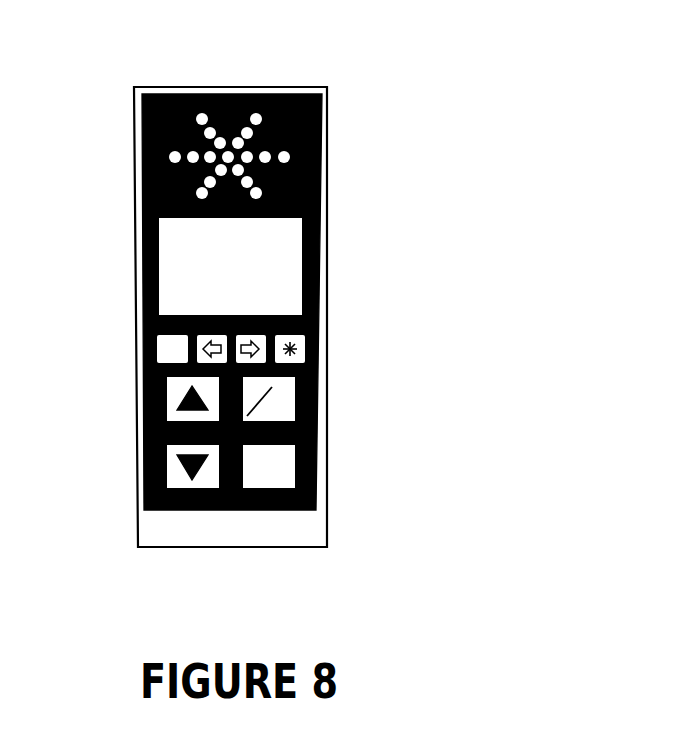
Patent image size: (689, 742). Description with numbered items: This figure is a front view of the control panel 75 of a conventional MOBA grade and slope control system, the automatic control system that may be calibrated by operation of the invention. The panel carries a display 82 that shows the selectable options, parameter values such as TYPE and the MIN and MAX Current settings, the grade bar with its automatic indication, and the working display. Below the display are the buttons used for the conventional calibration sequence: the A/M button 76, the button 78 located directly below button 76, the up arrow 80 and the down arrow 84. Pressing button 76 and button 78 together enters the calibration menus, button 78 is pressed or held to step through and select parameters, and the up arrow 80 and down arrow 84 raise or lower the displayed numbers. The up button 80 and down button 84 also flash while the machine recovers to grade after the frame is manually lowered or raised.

The control panel 75 is at (252, 68).
The A/M button 76 is at (332, 399).
The button 78 is at (333, 466).
The up arrow 80 is at (131, 411).
The display 82 is at (277, 293).
The down arrow 84 is at (131, 479).